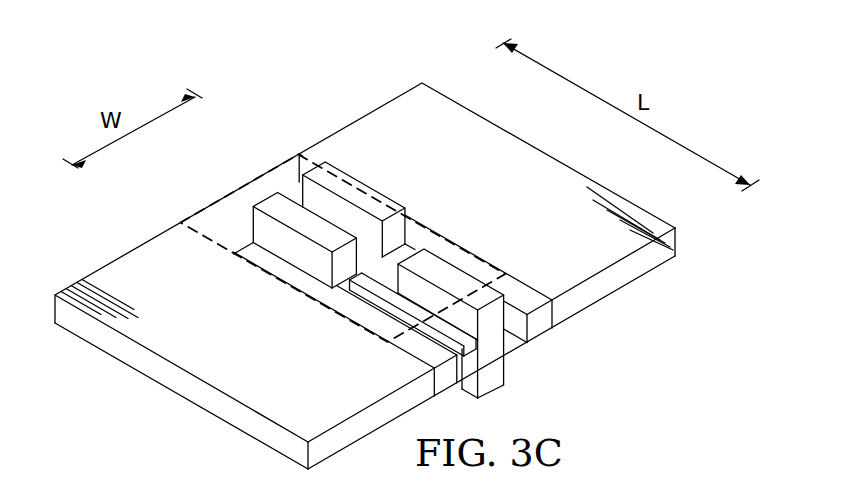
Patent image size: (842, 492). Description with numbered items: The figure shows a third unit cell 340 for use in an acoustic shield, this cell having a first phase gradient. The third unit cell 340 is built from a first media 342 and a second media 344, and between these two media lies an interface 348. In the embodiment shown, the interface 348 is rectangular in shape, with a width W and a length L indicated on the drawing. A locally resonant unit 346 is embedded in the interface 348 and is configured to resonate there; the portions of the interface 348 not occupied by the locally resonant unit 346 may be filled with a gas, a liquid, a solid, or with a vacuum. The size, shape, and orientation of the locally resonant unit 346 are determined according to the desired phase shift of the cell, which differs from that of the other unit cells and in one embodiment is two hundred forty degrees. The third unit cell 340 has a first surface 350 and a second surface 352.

The third unit cell 340 is at (365, 236).
The first media 342 is at (116, 272).
The second media 344 is at (522, 153).
The locally resonant unit 346 is at (514, 372).
The interface 348 is at (236, 187).
The first surface 350 is at (180, 385).
The second surface 352 is at (568, 166).